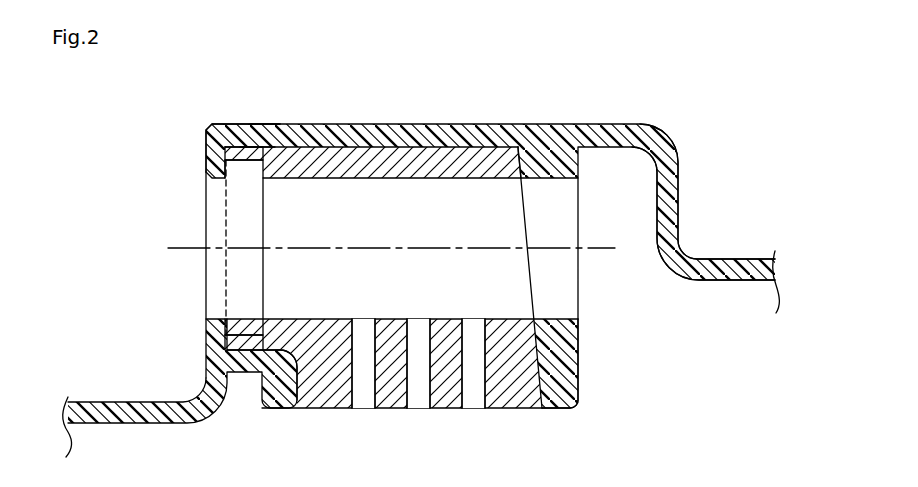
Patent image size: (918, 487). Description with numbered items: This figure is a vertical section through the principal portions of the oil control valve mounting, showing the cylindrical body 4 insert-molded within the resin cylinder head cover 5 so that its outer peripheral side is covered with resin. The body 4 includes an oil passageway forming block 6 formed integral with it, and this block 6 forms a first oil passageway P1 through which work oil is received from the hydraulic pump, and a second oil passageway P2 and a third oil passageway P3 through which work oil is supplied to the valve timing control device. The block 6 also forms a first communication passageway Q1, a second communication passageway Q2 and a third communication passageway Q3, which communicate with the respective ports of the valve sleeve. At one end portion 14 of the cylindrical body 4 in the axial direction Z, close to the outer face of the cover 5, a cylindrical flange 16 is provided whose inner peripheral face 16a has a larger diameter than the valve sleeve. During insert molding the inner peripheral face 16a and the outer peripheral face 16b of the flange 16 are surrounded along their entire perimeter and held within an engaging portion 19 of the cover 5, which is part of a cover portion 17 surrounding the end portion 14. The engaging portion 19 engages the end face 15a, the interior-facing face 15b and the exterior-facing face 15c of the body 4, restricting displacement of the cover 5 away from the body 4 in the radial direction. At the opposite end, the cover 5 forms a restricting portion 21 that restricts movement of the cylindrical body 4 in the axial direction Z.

The cylindrical body 4 is at (388, 135).
The cylinder head cover 5 is at (611, 124).
The oil passageway forming block 6 is at (531, 383).
The one end portion 14 is at (233, 142).
The end face 15a is at (224, 342).
The interior-facing face 15b is at (242, 335).
The exterior-facing face 15c is at (240, 351).
The flange 16 is at (223, 157).
The inner peripheral face 16a is at (238, 157).
The outer peripheral face 16b is at (257, 142).
The cover portion 17 is at (206, 325).
The engaging portion 19 is at (262, 136).
The restricting portion 21 is at (515, 165).
The first oil passageway P1 is at (418, 410).
The second oil passageway P2 is at (363, 410).
The third oil passageway P3 is at (475, 408).
The first communication passageway Q1 is at (420, 401).
The second communication passageway Q2 is at (338, 397).
The third communication passageway Q3 is at (473, 363).
The axial direction Z is at (384, 250).